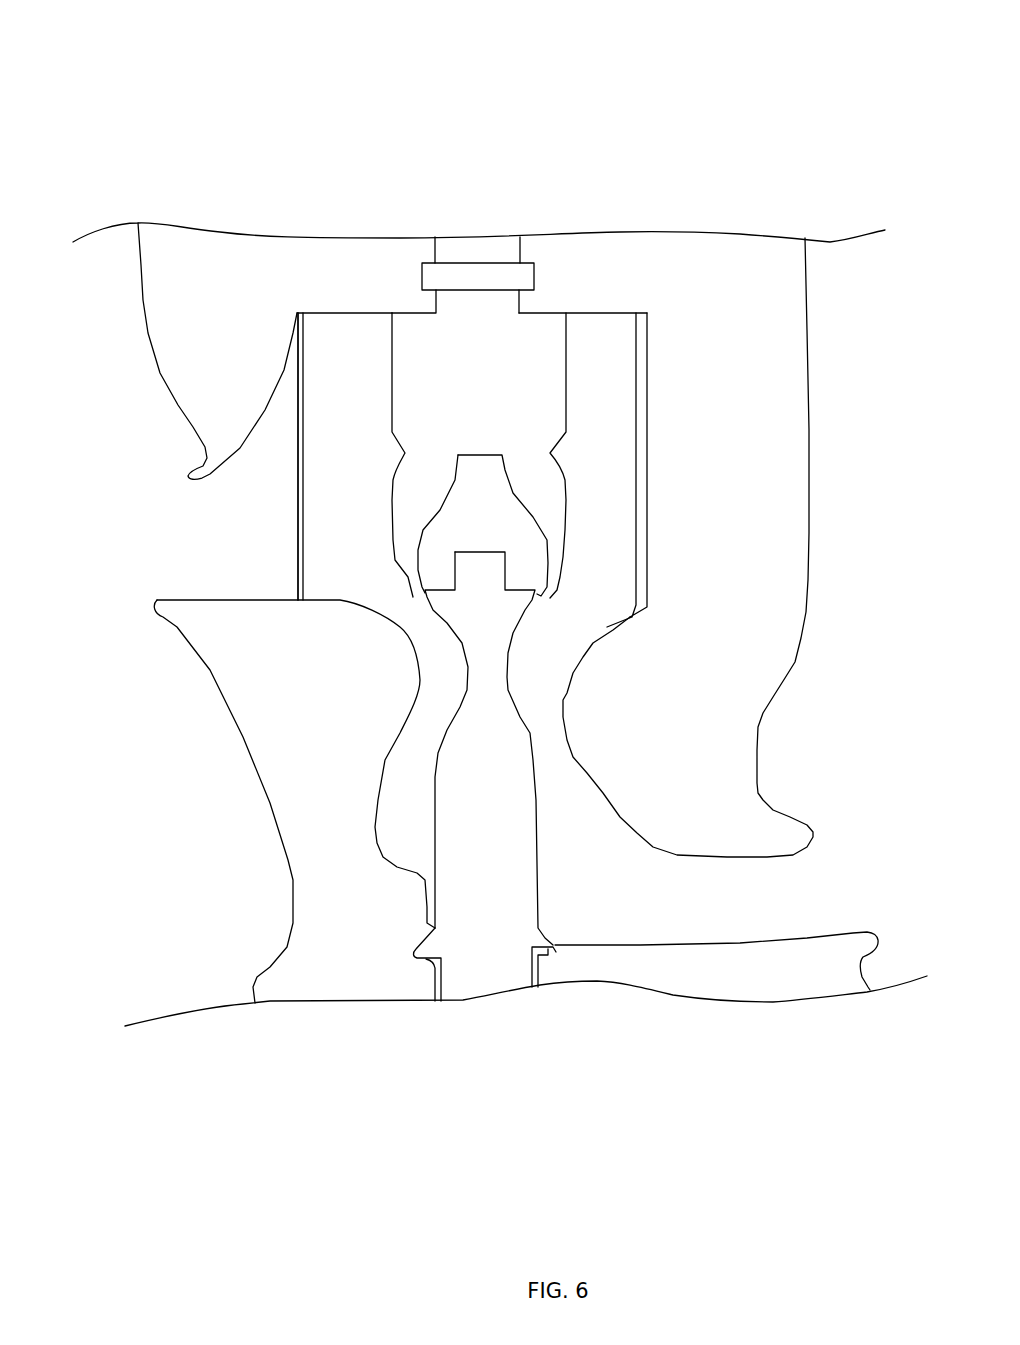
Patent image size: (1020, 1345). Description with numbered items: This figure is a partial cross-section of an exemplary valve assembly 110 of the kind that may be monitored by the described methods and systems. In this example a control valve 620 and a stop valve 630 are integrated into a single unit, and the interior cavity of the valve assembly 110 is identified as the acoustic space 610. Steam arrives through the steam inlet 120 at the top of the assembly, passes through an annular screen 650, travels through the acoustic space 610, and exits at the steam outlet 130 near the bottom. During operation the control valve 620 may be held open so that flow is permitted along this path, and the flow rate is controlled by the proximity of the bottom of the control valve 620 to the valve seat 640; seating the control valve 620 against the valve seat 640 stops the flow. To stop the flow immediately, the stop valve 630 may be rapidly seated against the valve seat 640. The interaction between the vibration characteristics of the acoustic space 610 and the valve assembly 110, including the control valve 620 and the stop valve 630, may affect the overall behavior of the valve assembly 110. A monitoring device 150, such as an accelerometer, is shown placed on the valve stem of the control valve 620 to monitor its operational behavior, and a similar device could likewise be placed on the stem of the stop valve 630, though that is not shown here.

The valve assembly 110 is at (231, 126).
The steam inlet 120 is at (213, 517).
The steam outlet 130 is at (672, 910).
The monitoring device 150 is at (535, 272).
The acoustic space 610 is at (337, 555).
The control valve 620 is at (408, 398).
The stop valve 630 is at (496, 768).
The valve seat 640 is at (390, 633).
The annular screen 650 is at (298, 552).